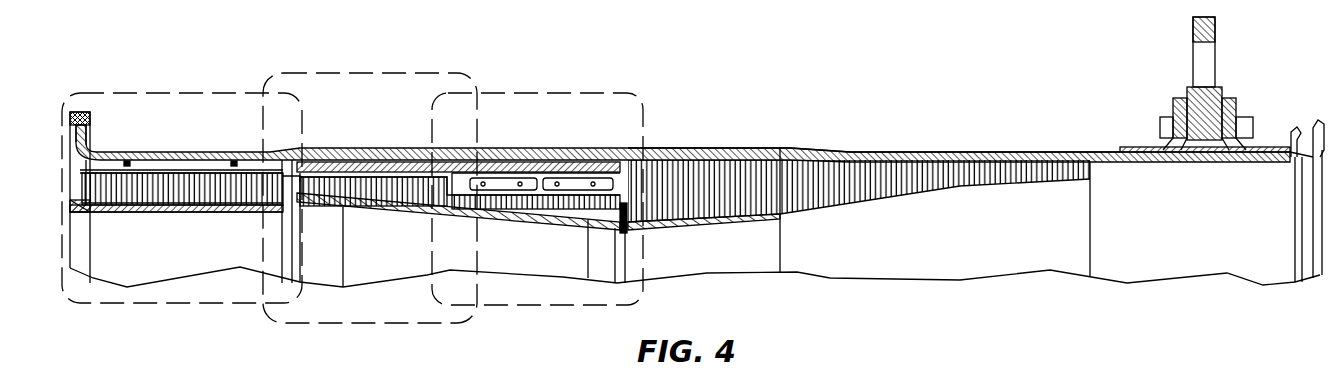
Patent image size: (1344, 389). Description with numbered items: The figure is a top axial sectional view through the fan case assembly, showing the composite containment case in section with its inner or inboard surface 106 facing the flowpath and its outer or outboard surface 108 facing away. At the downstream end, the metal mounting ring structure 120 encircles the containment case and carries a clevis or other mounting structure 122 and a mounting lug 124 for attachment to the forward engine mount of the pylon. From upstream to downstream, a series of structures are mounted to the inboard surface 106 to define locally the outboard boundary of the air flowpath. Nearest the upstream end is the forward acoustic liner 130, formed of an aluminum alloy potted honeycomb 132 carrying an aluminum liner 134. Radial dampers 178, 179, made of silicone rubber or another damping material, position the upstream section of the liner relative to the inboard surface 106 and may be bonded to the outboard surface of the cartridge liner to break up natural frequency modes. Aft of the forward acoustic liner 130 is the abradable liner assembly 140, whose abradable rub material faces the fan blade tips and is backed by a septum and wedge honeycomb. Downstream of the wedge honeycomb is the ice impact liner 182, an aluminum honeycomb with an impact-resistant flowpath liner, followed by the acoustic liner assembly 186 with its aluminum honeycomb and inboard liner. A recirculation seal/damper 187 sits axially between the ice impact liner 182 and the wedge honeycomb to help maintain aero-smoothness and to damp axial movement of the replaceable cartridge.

The inner/inboard surface 106 is at (342, 150).
The outer/outboard surface 108 is at (373, 149).
The mounting ring structure 120 is at (1227, 84).
The mounting structure 122 is at (1240, 117).
The mounting lug 124 is at (1213, 88).
The forward acoustic liner 130 is at (213, 288).
The potted honeycomb 132 is at (214, 192).
The aluminum liner 134 is at (152, 222).
The abradable liner assembly 140 is at (379, 284).
The radial damper 178 is at (97, 134).
The radial damper 179 is at (176, 134).
The ice impact liner 182 is at (718, 188).
The acoustic liner assembly 186 is at (846, 185).
The recirculation seal/damper 187 is at (626, 236).